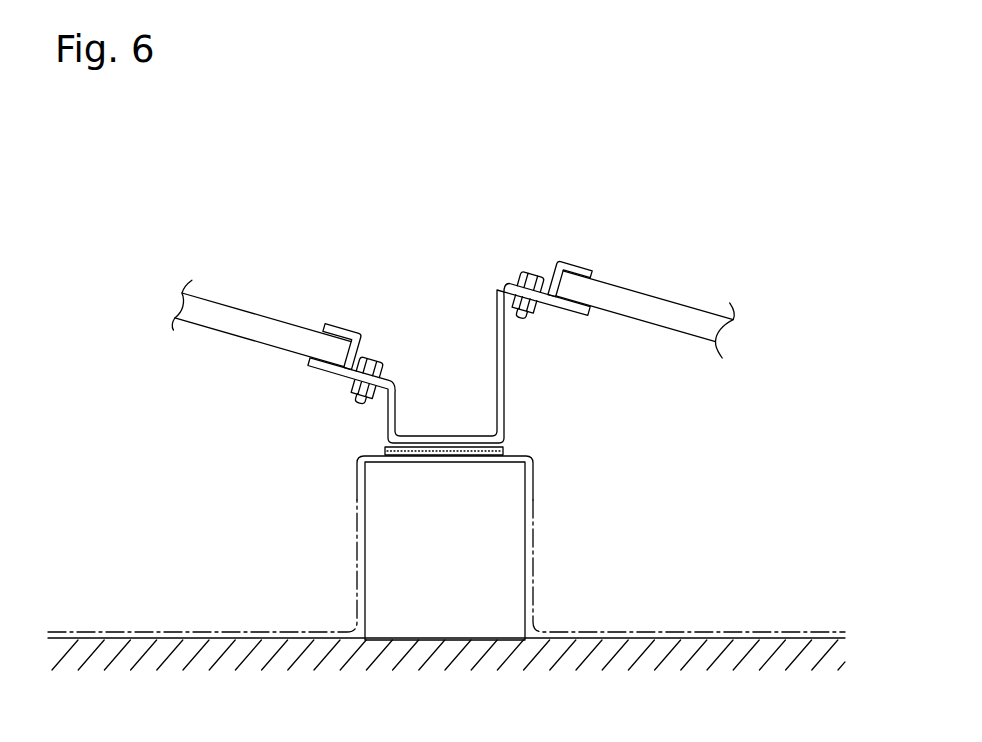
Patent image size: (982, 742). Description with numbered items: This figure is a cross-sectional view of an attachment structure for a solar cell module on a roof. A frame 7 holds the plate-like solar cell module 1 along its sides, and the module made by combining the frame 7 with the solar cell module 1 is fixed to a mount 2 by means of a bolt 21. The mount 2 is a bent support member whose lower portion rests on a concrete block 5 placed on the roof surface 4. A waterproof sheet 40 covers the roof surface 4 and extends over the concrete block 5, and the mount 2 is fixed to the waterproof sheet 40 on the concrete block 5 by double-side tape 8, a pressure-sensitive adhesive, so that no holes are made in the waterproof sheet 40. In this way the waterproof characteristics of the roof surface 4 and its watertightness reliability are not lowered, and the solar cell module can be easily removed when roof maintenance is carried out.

The solar cell module 1 is at (670, 304).
The mount 2 is at (505, 380).
The roof surface 4 is at (90, 648).
The concrete block 5 is at (503, 545).
The frame 7 is at (577, 268).
The double-side tape 8 is at (503, 450).
The bolt 21 is at (378, 358).
The waterproof sheet 40 is at (137, 632).